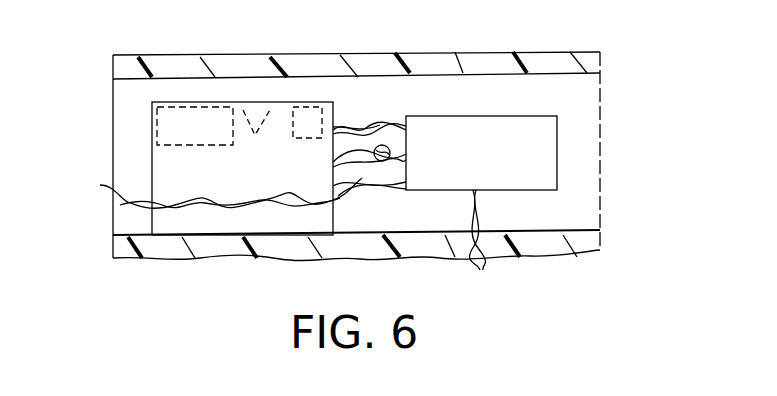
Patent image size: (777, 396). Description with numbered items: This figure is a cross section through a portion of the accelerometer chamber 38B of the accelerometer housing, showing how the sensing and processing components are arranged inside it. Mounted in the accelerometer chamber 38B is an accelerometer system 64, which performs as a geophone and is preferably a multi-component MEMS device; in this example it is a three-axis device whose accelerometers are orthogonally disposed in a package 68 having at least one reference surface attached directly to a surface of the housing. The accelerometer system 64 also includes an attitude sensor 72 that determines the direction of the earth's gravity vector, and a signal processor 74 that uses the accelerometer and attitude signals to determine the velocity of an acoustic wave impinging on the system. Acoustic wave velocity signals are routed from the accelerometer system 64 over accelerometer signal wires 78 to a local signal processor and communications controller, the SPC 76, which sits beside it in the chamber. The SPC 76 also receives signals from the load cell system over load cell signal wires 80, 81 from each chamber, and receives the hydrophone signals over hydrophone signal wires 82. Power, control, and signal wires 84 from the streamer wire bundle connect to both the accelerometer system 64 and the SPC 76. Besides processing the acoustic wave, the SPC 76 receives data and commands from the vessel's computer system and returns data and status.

The accelerometer chamber 38B is at (570, 93).
The accelerometer system 64 is at (260, 176).
The package 68 is at (155, 121).
The attitude sensor 72 is at (252, 108).
The signal processor 74 is at (340, 96).
The local signal processor and communications controller (SPC) 76 is at (494, 161).
The accelerometer signal wires 78 is at (383, 128).
The load cell signal wires 80 is at (492, 240).
The load cell signal wires 81 is at (402, 162).
The hydrophone signal wires 82 is at (128, 203).
The power, control, and signal wires 84 is at (363, 158).